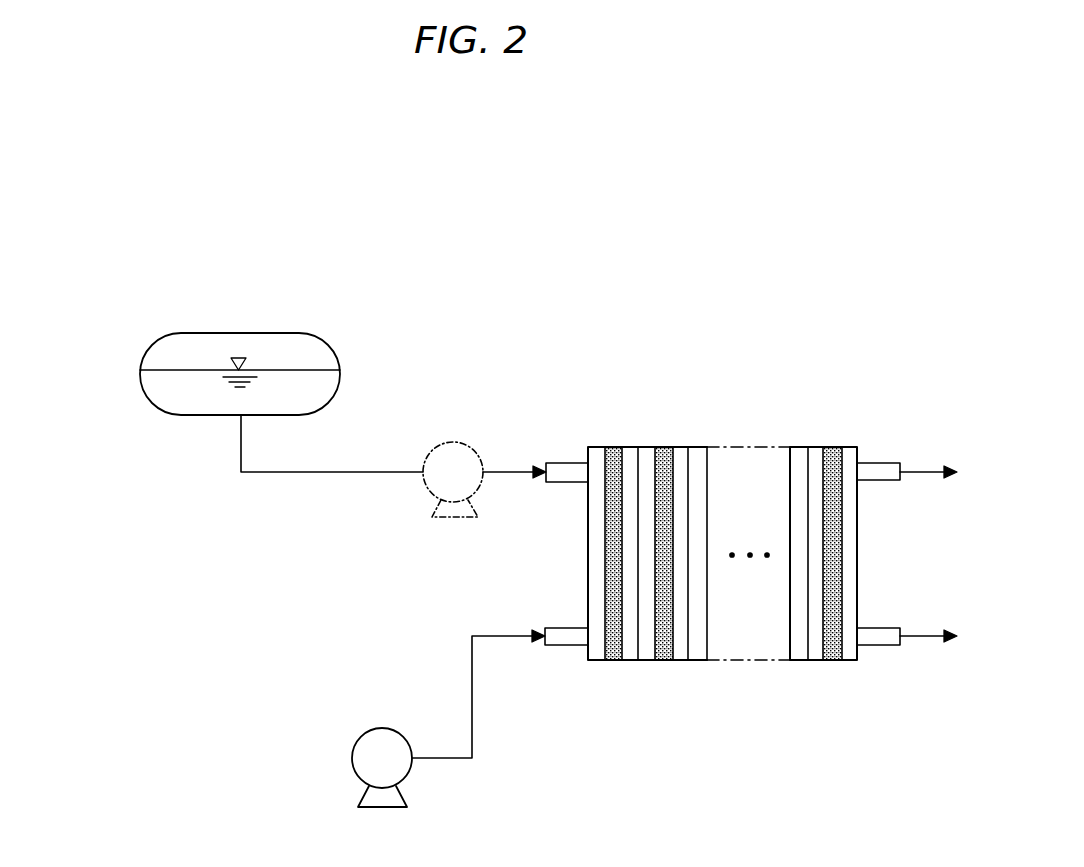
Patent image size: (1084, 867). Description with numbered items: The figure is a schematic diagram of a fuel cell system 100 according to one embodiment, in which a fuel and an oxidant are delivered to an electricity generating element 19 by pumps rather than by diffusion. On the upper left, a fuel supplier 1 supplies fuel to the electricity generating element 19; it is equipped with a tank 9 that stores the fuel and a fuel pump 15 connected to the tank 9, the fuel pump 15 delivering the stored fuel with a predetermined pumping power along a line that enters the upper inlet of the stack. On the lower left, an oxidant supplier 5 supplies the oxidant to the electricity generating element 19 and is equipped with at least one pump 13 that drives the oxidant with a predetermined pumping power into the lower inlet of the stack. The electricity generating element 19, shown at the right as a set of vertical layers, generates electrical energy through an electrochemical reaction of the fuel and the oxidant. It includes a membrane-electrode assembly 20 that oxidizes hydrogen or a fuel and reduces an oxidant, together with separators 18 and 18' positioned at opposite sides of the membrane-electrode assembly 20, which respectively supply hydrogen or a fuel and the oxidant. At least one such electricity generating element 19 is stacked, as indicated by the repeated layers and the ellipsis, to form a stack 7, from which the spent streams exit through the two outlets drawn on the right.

The fuel cell system 100 is at (545, 258).
The fuel supplier 1 is at (191, 346).
The tank 9 is at (243, 333).
The fuel pump 15 is at (455, 442).
The stack 7 is at (751, 576).
The separator 18 is at (620, 599).
The membrane-electrode assembly 20 is at (665, 649).
The separator 18' is at (708, 599).
The electricity generating element 19 is at (664, 626).
The oxidant supplier 5 is at (330, 744).
The pump 13 is at (361, 737).